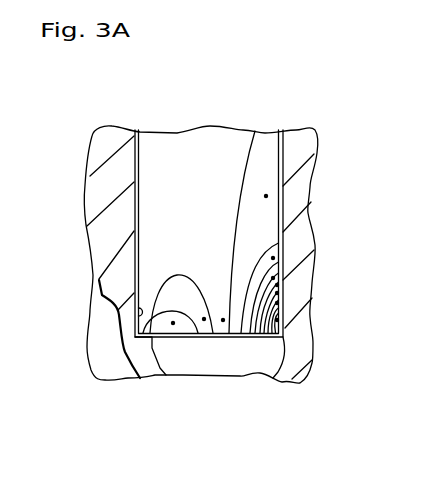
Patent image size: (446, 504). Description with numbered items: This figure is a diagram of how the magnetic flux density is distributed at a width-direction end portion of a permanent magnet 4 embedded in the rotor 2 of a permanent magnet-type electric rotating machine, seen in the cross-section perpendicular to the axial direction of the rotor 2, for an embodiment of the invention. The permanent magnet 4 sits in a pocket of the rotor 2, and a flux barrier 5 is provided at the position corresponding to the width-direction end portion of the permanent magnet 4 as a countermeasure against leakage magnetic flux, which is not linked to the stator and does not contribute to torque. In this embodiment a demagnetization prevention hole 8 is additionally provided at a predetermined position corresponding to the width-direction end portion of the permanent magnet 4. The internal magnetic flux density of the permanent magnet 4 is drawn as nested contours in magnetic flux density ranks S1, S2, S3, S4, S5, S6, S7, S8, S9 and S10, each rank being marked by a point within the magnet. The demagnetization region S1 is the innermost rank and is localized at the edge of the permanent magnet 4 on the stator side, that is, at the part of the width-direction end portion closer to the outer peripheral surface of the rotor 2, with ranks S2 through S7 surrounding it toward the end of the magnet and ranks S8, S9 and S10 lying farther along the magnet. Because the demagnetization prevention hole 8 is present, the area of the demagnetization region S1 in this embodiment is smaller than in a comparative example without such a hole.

The rotor 2 is at (300, 143).
The permanent magnet 4 is at (210, 140).
The flux barrier 5 is at (276, 361).
The demagnetization prevention hole 8 is at (121, 346).
The demagnetization region S1 is at (277, 320).
The magnetic flux density rank S2 is at (277, 303).
The magnetic flux density rank S3 is at (277, 293).
The magnetic flux density rank S4 is at (277, 285).
The magnetic flux density rank S5 is at (273, 278).
The magnetic flux density rank S6 is at (273, 258).
The magnetic flux density rank S7 is at (266, 196).
The magnetic flux density rank S8 is at (223, 320).
The magnetic flux density rank S9 is at (204, 319).
The magnetic flux density rank S10 is at (173, 323).